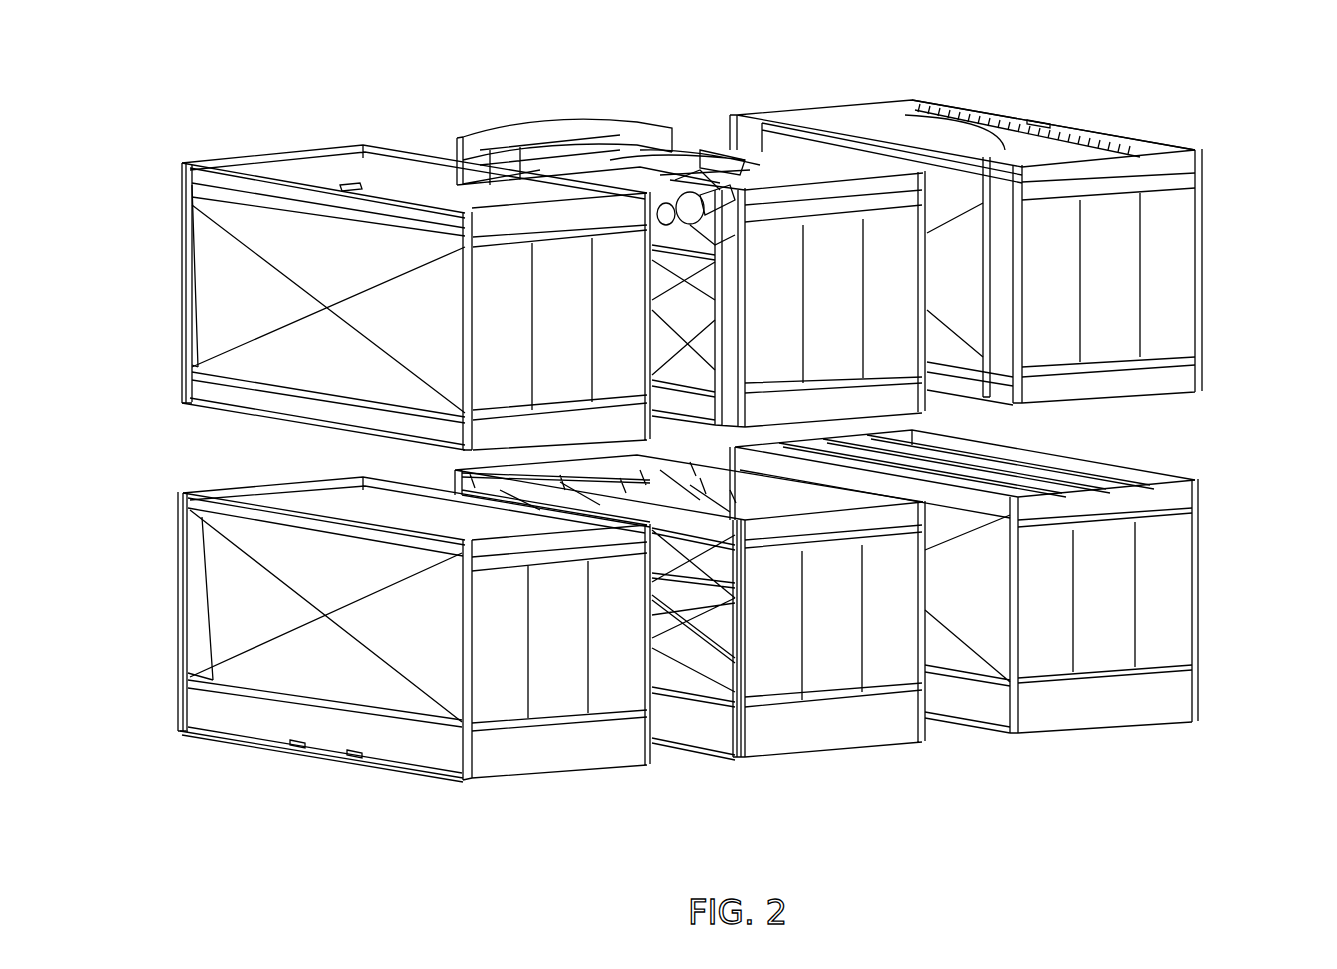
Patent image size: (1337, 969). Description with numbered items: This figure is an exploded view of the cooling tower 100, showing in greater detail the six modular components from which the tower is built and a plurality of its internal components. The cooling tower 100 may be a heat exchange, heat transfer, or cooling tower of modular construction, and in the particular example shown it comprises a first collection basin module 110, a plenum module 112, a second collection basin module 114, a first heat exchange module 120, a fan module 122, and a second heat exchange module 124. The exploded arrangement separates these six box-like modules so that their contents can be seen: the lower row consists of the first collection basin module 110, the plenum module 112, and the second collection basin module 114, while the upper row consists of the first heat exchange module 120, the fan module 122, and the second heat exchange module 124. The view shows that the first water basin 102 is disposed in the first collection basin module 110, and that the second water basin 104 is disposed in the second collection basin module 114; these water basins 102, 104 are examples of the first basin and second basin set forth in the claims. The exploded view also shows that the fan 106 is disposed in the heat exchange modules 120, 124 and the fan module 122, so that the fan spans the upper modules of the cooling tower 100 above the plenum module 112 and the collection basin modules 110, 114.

The cooling tower 100 is at (1140, 104).
The first water basin 102 is at (423, 762).
The second water basin 104 is at (1178, 695).
The fan 106 is at (690, 150).
The first collection basin module 110 is at (180, 617).
The plenum module 112 is at (835, 748).
The second collection basin module 114 is at (1201, 590).
The first heat exchange module 120 is at (180, 265).
The fan module 122 is at (640, 128).
The second heat exchange module 124 is at (1201, 257).